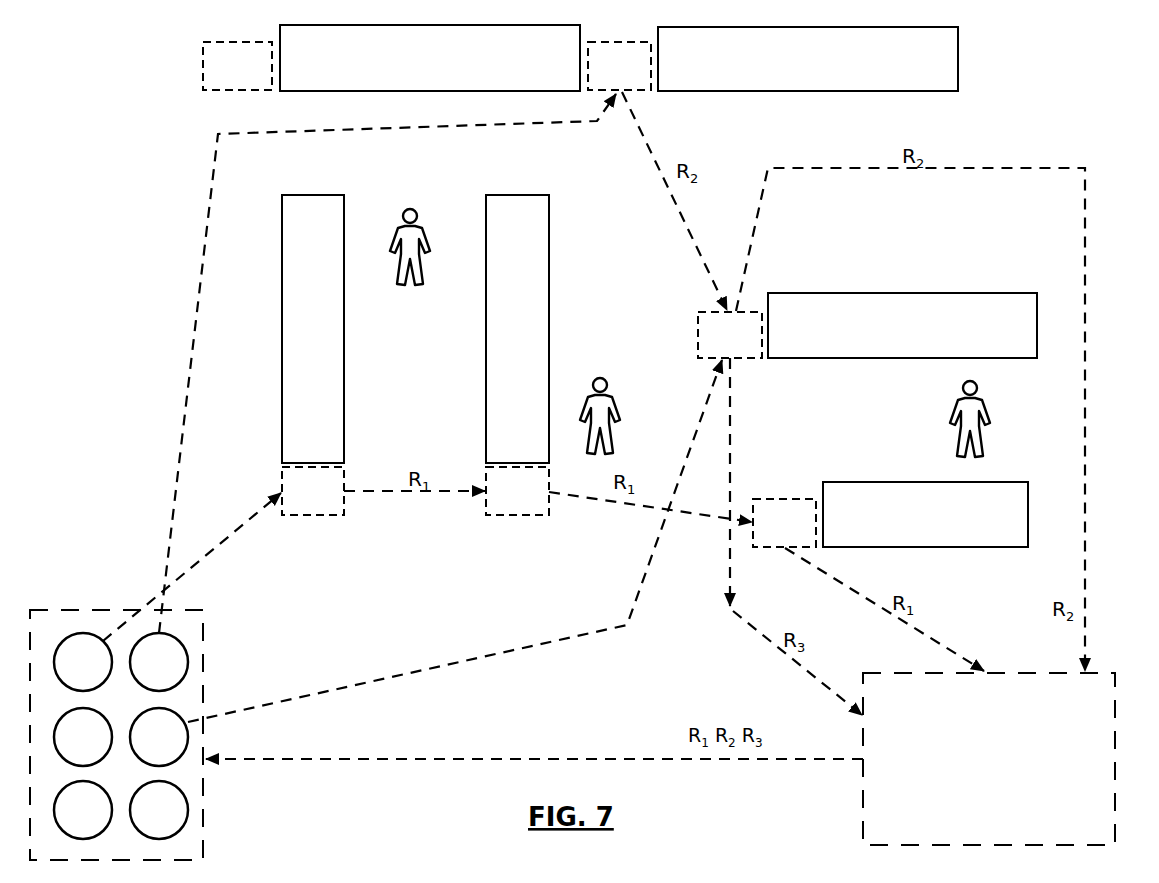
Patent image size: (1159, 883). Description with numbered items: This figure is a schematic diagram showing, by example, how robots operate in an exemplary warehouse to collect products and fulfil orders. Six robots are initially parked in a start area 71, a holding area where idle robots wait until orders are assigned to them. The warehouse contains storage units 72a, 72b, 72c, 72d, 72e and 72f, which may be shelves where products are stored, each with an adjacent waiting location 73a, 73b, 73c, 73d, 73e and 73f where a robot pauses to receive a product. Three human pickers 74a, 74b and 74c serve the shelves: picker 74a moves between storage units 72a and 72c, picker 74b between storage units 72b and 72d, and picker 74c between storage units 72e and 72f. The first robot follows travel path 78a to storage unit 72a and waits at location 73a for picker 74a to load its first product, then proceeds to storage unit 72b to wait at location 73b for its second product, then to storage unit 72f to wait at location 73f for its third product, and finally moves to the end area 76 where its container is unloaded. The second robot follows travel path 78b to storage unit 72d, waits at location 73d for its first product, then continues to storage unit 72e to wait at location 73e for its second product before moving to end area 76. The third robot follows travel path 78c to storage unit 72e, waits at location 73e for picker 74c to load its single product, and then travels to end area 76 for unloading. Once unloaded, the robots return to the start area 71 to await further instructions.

The start area 71 is at (204, 645).
The storage unit 72a is at (313, 329).
The storage unit 72b is at (517, 329).
The storage unit 72c is at (430, 58).
The storage unit 72d is at (808, 59).
The storage unit 72e is at (902, 325).
The storage unit 72f is at (925, 514).
The location 73a is at (313, 491).
The location 73b is at (517, 491).
The location 73c is at (237, 66).
The location 73d is at (619, 66).
The location 73e is at (730, 335).
The location 73f is at (784, 523).
The human picker 74a is at (419, 223).
The human picker 74b is at (609, 392).
The human picker 74c is at (979, 395).
The end area 76 is at (989, 759).
The travel path 78a is at (247, 522).
The travel path 78b is at (175, 465).
The travel path 78c is at (489, 662).